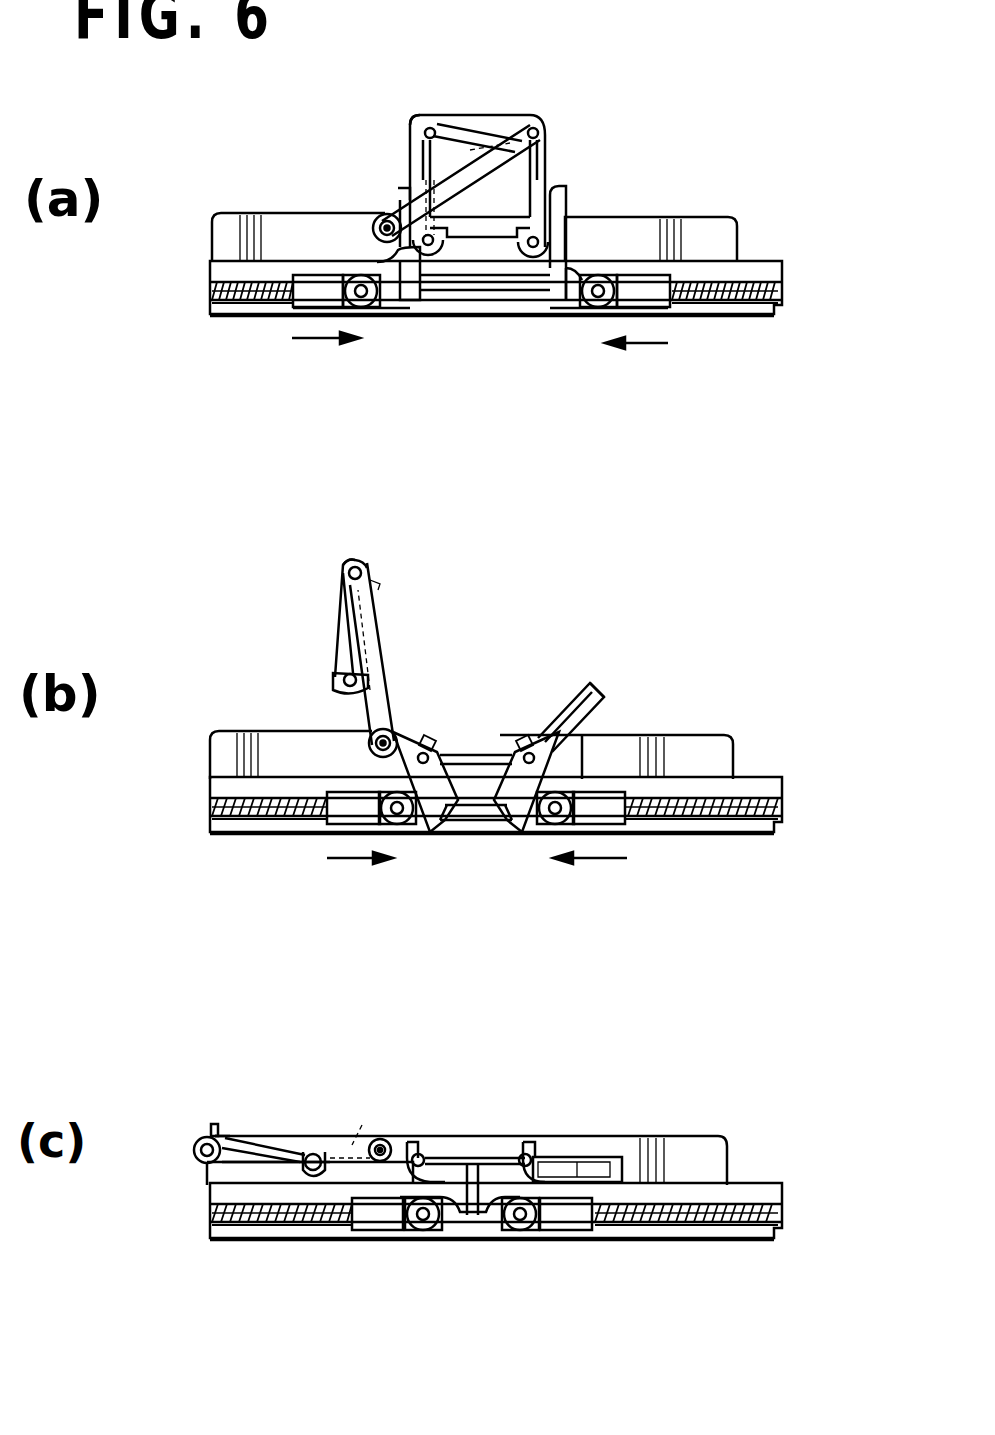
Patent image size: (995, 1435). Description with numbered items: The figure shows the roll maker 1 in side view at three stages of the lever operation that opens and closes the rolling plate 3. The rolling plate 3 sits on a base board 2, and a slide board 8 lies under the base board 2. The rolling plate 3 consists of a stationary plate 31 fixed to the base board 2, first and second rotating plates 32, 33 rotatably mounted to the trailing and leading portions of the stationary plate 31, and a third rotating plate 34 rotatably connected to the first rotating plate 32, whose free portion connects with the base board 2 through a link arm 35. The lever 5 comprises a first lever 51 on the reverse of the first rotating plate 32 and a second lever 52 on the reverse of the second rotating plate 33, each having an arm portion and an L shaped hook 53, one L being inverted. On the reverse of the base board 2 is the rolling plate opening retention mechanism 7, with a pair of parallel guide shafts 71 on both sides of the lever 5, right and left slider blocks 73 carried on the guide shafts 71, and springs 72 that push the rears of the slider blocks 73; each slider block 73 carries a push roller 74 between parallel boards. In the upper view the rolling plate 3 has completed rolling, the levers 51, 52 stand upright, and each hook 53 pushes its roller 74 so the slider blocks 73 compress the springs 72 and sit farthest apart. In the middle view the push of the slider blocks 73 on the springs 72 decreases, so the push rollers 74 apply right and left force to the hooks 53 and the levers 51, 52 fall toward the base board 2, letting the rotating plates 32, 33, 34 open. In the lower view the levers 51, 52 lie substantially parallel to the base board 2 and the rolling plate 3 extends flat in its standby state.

The roll maker 1 is at (705, 157).
The base board 2 is at (743, 238).
The rolling plate 3 is at (530, 108).
The lever 5 is at (500, 335).
The rolling plate opening retention mechanism 7 is at (438, 330).
The slide board 8 is at (778, 268).
The stationary plate 31 is at (492, 228).
The first rotating plate 32 is at (410, 160).
The second rotating plate 33 is at (552, 145).
The third rotating plate 34 is at (458, 130).
The link arm 35 is at (470, 160).
The first lever 51 is at (397, 187).
The second lever 52 is at (570, 210).
The L shaped hook 53 is at (377, 263).
The guide shaft 71 is at (212, 291).
The spring 72 is at (258, 300).
The slider block 73 is at (290, 315).
The push roller 74 is at (363, 317).